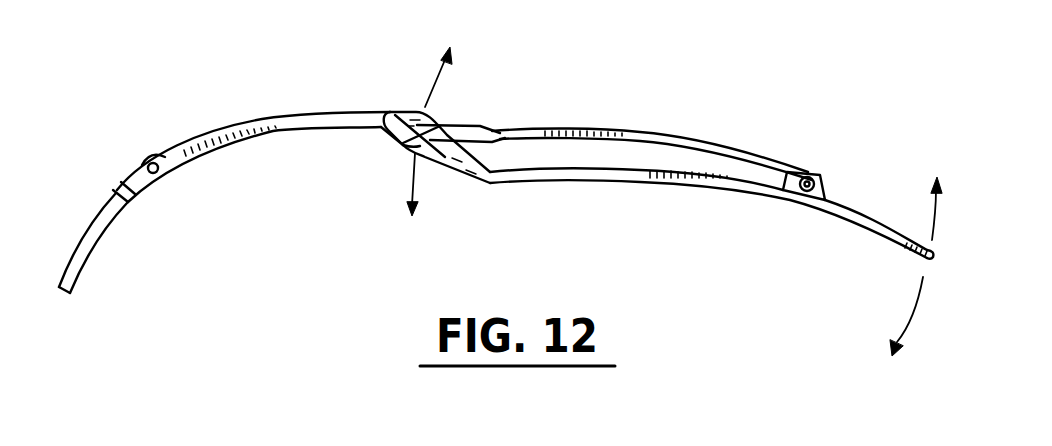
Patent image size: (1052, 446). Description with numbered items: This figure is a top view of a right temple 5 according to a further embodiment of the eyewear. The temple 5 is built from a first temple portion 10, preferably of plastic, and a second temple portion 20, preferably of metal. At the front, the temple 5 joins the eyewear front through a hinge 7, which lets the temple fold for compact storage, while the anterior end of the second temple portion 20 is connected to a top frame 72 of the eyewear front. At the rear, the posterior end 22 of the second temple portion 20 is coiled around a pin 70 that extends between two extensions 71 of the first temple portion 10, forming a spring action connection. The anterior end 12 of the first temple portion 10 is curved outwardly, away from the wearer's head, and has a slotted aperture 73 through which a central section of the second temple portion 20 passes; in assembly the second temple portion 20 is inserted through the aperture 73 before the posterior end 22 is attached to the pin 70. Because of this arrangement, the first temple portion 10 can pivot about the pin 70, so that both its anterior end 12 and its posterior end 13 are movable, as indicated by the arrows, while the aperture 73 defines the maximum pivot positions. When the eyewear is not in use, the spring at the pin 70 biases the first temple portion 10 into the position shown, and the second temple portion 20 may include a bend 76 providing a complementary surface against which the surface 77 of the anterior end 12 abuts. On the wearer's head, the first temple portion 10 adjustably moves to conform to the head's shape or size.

The temple 5 is at (260, 108).
The hinge 7 is at (155, 174).
The top frame 72 is at (107, 226).
The anterior end 12 is at (407, 110).
The bend 76 is at (383, 113).
The surface 77 is at (407, 145).
The slotted aperture 73 is at (437, 121).
The second temple portion 20 is at (633, 128).
The first temple portion 10 is at (630, 176).
The pin 70 is at (811, 174).
The extension 71 is at (793, 170).
The posterior end 22 is at (822, 182).
The posterior end 13 is at (933, 263).